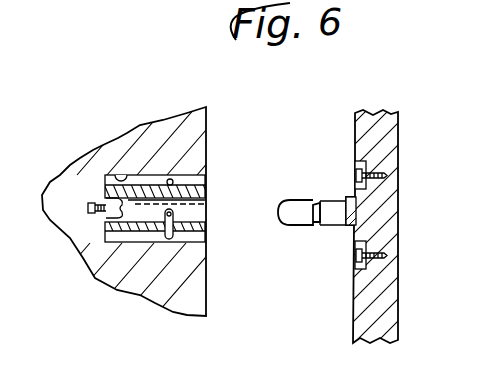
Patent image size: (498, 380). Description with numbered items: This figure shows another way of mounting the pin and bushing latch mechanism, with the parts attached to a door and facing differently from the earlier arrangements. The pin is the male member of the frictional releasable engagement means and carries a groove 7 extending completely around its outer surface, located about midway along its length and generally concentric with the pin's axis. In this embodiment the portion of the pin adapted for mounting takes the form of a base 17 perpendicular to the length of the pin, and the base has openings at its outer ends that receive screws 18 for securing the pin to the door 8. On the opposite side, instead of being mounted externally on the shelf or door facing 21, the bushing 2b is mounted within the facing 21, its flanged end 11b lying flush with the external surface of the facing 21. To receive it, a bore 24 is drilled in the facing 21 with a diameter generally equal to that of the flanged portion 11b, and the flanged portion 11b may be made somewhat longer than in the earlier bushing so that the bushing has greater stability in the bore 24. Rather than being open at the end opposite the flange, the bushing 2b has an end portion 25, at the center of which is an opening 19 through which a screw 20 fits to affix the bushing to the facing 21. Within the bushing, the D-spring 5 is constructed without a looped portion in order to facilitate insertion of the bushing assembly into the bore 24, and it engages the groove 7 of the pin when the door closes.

The bushing 2b is at (199, 184).
The D-spring 5 is at (172, 174).
The groove 7 is at (321, 199).
The door 8 is at (375, 290).
The flanged end of bushing 11b is at (203, 232).
The base 17 is at (343, 222).
The screws 18 is at (385, 175).
The opening 19 is at (110, 200).
The screw 20 is at (98, 208).
The facing 21 is at (196, 283).
The bore 24 is at (117, 173).
The end portion 25 is at (103, 233).